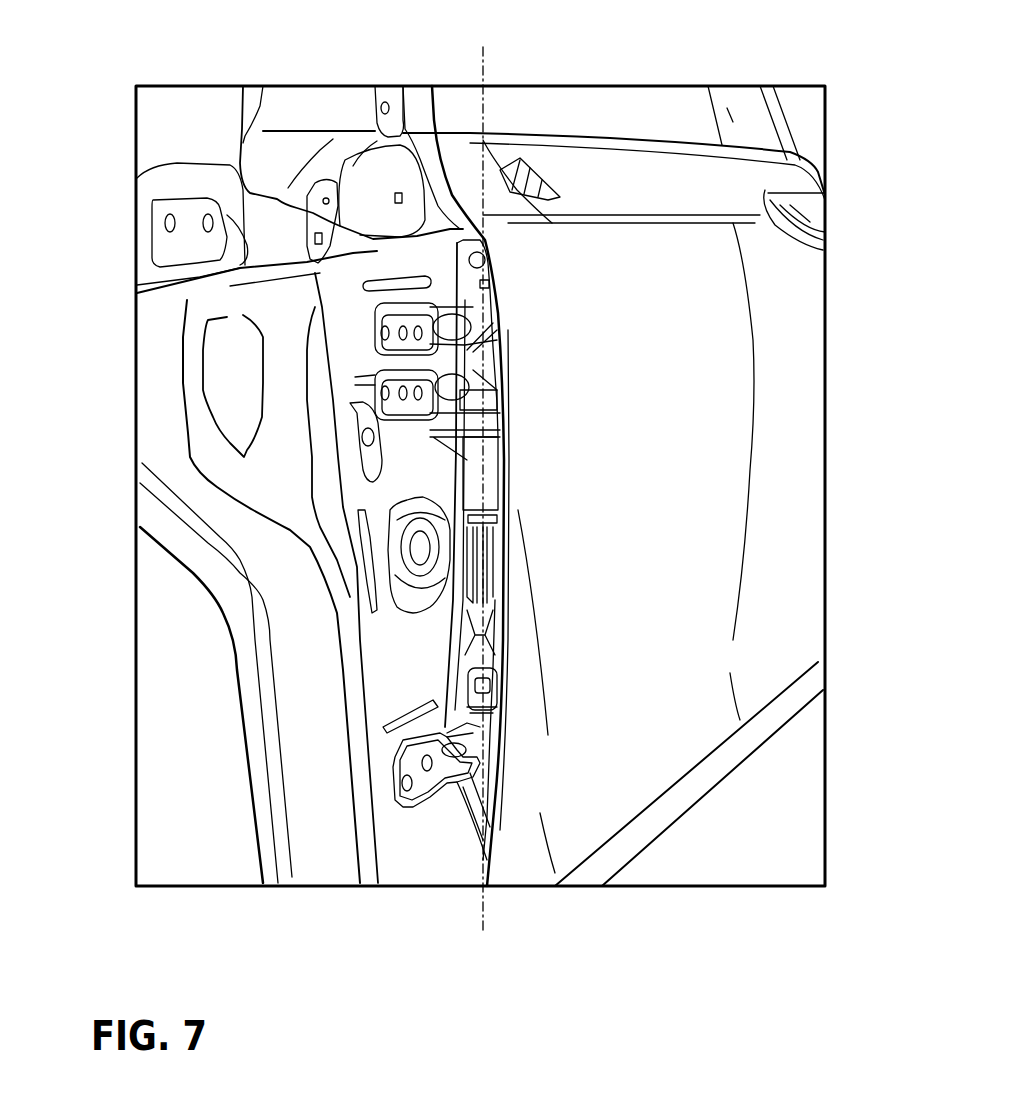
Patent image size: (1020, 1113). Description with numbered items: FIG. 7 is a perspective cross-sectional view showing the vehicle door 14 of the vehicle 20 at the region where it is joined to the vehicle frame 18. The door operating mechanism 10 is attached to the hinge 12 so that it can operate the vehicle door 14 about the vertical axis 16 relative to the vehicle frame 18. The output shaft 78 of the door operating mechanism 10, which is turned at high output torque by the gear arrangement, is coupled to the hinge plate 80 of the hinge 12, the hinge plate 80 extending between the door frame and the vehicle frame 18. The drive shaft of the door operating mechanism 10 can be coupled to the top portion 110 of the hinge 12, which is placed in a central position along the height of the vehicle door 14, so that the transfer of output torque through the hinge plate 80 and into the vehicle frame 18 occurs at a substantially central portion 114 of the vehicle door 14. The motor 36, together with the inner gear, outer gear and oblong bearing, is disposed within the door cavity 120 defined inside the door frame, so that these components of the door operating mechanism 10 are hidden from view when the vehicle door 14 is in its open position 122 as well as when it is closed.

The door operating mechanism 10 is at (440, 472).
The hinge 12 is at (423, 296).
The vehicle door 14 is at (780, 354).
The vertical axis 16 is at (485, 78).
The vehicle frame 18 is at (347, 318).
The vehicle 20 is at (600, 64).
The motor 36 is at (503, 476).
The output shaft 78 is at (360, 408).
The hinge plate 80 is at (355, 377).
The top portion 110 is at (371, 269).
The substantially central portion 114 is at (517, 343).
The door cavity 120 is at (447, 815).
The open position 122 is at (747, 777).